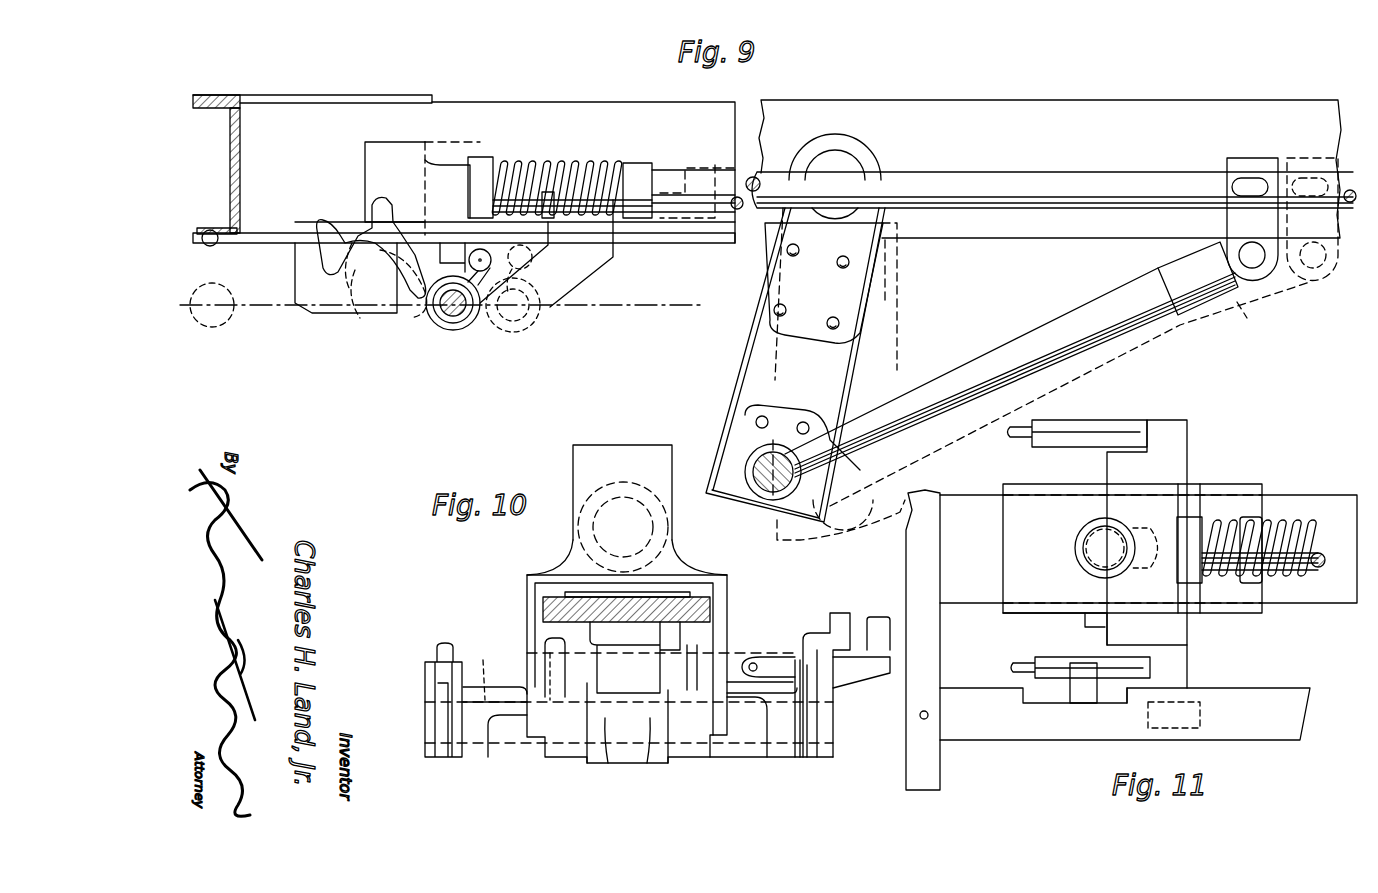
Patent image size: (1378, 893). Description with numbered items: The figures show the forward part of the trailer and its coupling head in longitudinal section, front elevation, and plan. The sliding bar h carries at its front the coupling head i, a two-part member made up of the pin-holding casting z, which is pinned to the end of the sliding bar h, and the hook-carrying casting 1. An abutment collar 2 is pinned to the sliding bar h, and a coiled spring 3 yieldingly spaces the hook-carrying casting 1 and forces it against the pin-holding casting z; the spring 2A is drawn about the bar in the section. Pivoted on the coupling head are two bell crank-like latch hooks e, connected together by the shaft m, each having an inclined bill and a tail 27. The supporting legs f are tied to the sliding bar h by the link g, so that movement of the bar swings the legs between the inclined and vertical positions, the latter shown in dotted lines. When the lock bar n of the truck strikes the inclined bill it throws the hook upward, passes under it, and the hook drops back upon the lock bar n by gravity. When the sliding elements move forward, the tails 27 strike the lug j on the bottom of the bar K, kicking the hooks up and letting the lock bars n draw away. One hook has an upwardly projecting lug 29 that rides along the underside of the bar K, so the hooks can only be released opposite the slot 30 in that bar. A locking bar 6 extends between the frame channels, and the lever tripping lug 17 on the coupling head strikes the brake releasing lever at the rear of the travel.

In FIG. 9, the bar K is at (245, 243).
In FIG. 11, the bar K is at (975, 737).
In FIG. 9, the pin-holding casting z is at (388, 165).
In FIG. 10, the pin-holding casting z is at (668, 527).
In FIG. 11, the pin-holding casting z is at (1160, 493).
In FIG. 9, the coupling head i is at (418, 143).
In FIG. 11, the coupling head i is at (1042, 500).
In FIG. 9, the hook-carrying casting 1 is at (483, 160).
In FIG. 11, the hook-carrying casting 1 is at (1230, 485).
In FIG. 9, the abutment collar 2 is at (640, 160).
In FIG. 9, the spring 2A is at (560, 175).
In FIG. 9, the coiled spring 3 is at (522, 175).
In FIG. 11, the coiled spring 3 is at (1305, 573).
In FIG. 9, the sliding bar h is at (675, 170).
In FIG. 11, the sliding bar h is at (1326, 563).
In FIG. 9, the latch hook e is at (335, 220).
In FIG. 10, the latch hook e is at (438, 648).
In FIG. 11, the latch hook e is at (1100, 422).
In FIG. 9, the tail 27 is at (470, 315).
In FIG. 10, the tail 27 is at (878, 665).
In FIG. 11, the tail 27 is at (1209, 680).
In FIG. 9, the lug j is at (445, 300).
In FIG. 11, the lug j is at (1165, 728).
In FIG. 9, the shaft m is at (535, 320).
In FIG. 10, the shaft m is at (490, 666).
In FIG. 9, the lock bar n is at (212, 327).
In FIG. 9, the supporting legs f is at (742, 348).
In FIG. 9, the link g is at (1015, 348).
In FIG. 10, the locking bar 6 is at (710, 606).
In FIG. 11, the locking bar 6 is at (1306, 495).
In FIG. 11, the lever tripping lug 17 is at (1065, 613).
In FIG. 10, the upwardly projecting lug 29 is at (848, 626).
In FIG. 11, the upwardly projecting lug 29 is at (1082, 697).
In FIG. 11, the slot 30 is at (1118, 703).